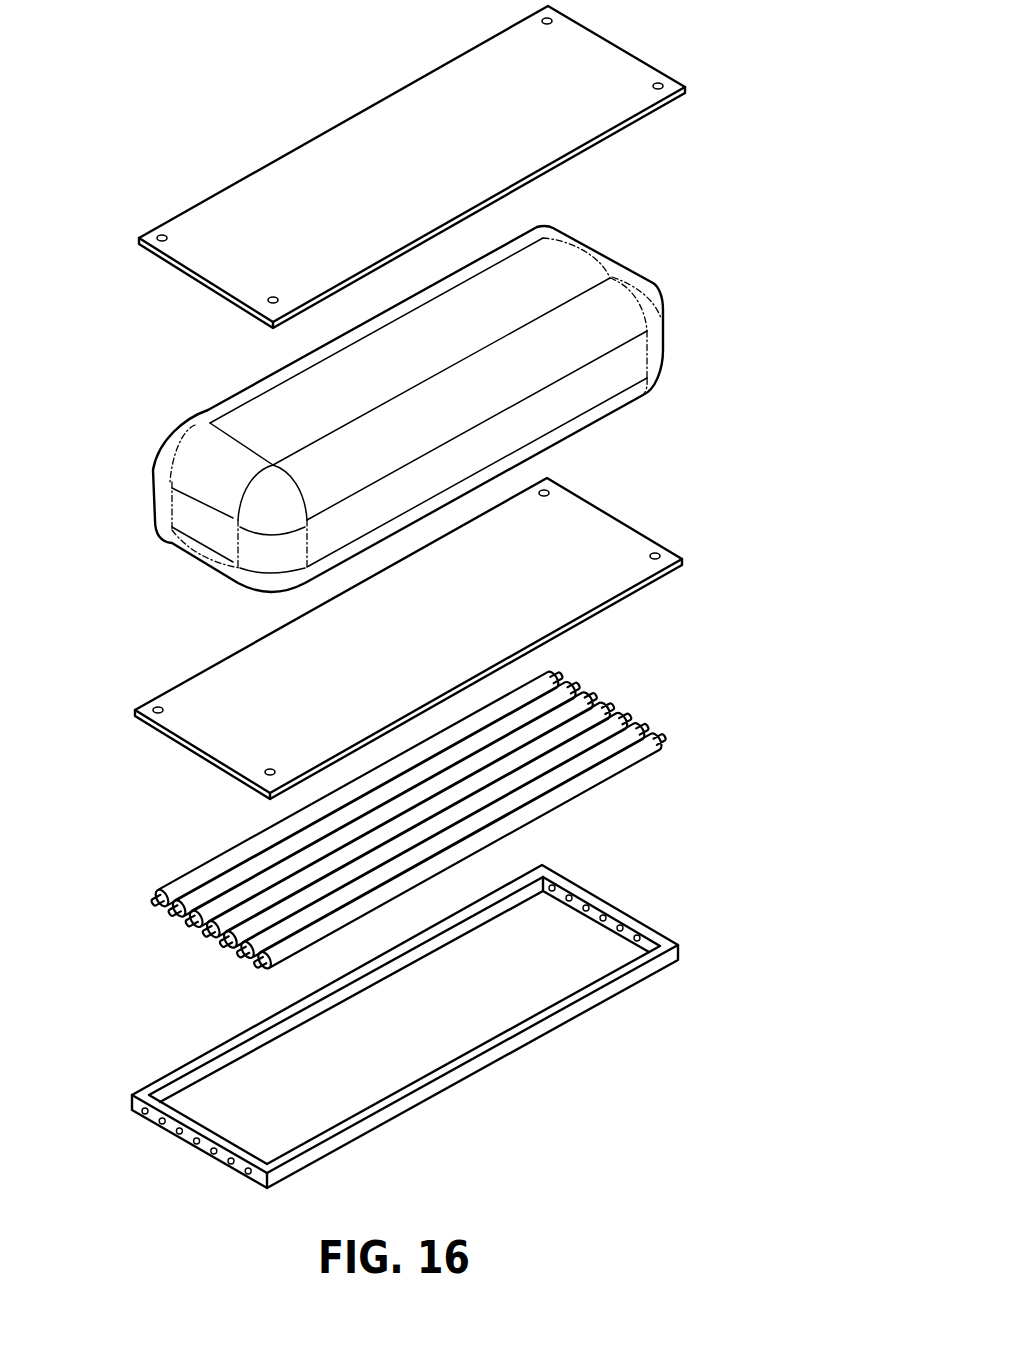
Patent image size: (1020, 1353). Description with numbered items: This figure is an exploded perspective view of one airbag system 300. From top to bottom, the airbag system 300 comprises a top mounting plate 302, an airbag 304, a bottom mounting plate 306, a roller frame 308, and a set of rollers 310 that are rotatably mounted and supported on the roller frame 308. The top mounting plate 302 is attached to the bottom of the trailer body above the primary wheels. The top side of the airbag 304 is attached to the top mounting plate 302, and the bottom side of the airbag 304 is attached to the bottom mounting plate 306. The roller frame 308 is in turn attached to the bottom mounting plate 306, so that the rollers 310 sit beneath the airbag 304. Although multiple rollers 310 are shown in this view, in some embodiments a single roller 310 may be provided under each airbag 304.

The airbag system 300 is at (727, 149).
The top mounting plate 302 is at (165, 221).
The airbag 304 is at (164, 441).
The bottom mounting plate 306 is at (163, 692).
The roller frame 308 is at (164, 1078).
The rollers 310 is at (560, 676).